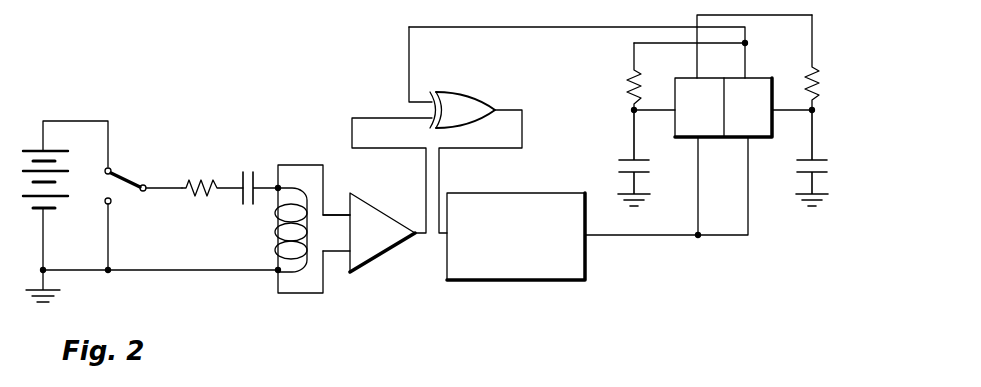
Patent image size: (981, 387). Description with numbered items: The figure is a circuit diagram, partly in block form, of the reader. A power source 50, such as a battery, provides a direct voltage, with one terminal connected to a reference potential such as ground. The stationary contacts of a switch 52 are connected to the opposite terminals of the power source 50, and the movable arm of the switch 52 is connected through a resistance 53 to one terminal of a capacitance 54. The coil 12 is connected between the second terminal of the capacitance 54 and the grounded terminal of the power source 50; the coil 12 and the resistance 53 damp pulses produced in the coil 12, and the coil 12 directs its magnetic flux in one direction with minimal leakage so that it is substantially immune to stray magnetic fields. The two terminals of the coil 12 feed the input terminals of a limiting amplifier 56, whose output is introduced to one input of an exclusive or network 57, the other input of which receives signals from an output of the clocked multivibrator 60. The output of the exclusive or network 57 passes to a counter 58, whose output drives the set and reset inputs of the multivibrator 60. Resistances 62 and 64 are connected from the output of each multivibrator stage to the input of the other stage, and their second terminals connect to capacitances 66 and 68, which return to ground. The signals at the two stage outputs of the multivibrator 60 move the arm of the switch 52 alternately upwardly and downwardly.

The coil 12 is at (280, 250).
The power source 50 is at (40, 210).
The switch 52 is at (134, 184).
The resistance 53 is at (214, 182).
The capacitance 54 is at (247, 205).
The limiting amplifier 56 is at (376, 215).
The exclusive or network 57 is at (463, 97).
The counter 58 is at (446, 268).
The multivibrator 60 is at (730, 156).
The resistance 62 is at (628, 92).
The resistance 64 is at (820, 80).
The capacitance 66 is at (618, 169).
The capacitance 68 is at (823, 170).